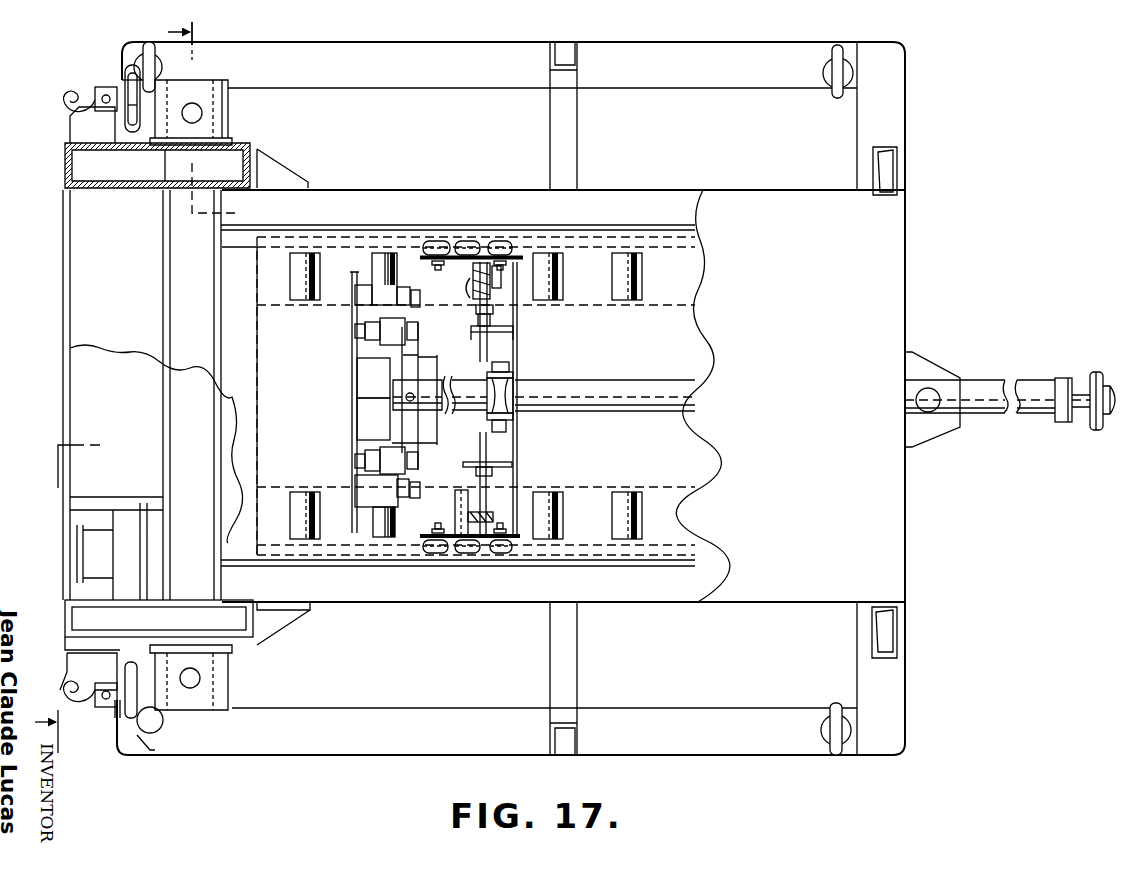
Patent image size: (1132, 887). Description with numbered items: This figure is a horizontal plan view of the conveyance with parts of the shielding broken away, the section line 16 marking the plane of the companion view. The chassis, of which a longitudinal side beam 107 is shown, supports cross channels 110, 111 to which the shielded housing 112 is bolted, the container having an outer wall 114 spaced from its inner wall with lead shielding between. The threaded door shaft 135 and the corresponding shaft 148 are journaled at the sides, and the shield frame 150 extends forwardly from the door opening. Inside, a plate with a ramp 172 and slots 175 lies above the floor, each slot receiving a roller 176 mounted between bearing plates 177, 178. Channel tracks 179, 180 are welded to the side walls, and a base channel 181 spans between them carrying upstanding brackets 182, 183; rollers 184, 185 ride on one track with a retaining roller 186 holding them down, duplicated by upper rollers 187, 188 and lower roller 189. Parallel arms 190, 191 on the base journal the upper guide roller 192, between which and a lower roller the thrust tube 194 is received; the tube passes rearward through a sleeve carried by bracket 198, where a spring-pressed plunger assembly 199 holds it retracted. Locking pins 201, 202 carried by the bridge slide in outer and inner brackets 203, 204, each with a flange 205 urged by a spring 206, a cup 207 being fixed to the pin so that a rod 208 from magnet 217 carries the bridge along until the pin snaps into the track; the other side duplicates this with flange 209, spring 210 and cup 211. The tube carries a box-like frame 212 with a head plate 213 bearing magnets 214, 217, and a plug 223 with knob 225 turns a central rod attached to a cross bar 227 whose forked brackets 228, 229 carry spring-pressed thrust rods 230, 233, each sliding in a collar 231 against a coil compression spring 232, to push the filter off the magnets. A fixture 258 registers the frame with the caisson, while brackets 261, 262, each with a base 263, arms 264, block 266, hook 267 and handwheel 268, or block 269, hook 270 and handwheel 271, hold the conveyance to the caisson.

The section line 16 is at (136, 387).
The longitudinal side beam 107 is at (626, 718).
The cross channel 110 is at (572, 135).
The cross channel 111 is at (865, 128).
The shielded housing 112 is at (908, 281).
The outer wall 114 is at (822, 350).
The shaft 135 is at (193, 102).
The shaft 148 is at (190, 688).
The frame 150 is at (62, 305).
The ramp 172 is at (230, 328).
The slot 175 is at (562, 277).
The roller 176 is at (549, 300).
The bearing plate 177 is at (578, 253).
The bearing plate 178 is at (677, 308).
The track 179 is at (303, 231).
The track 180 is at (640, 555).
The base channel 181 is at (519, 437).
The bracket 182 is at (434, 258).
The bracket 183 is at (431, 531).
The roller 184 is at (437, 243).
The roller 185 is at (498, 243).
The retaining roller 186 is at (465, 243).
The upper roller 187 is at (436, 553).
The upper roller 188 is at (503, 553).
The lower roller 189 is at (466, 553).
The arm 190 is at (510, 367).
The arm 191 is at (516, 420).
The upper guide roller 192 is at (514, 393).
The thrust tube 194 is at (592, 380).
The bracket 198 is at (926, 362).
The spring-pressed plunger assembly 199 is at (931, 410).
The locking pin 201 is at (476, 320).
The locking pin 202 is at (481, 460).
The outer bracket 203 is at (473, 266).
The inner bracket 204 is at (506, 333).
The flange 205 is at (502, 323).
The spring 206 is at (482, 328).
The cup 207 is at (494, 288).
The rod 208 is at (479, 301).
The flange 209 is at (470, 484).
The spring 210 is at (497, 470).
The cup 211 is at (480, 517).
The box-like frame 212 is at (384, 391).
The head plate 213 is at (350, 389).
The magnet 214 is at (367, 507).
The magnet 217 is at (372, 285).
The plug 223 is at (1075, 420).
The knob 225 is at (1097, 372).
The cross bar 227 is at (416, 370).
The forked bracket 228 is at (374, 419).
The forked bracket 229 is at (400, 341).
The thrust rod 230 is at (353, 339).
The collar 231 is at (362, 333).
The coil compression spring 232 is at (366, 326).
The thrust rod 233 is at (353, 459).
The fixture 258 is at (101, 533).
The bracket 261 is at (67, 653).
The bracket 262 is at (88, 126).
The base 263 is at (150, 640).
The arm 264 is at (83, 692).
The block 266 is at (117, 720).
The hook 267 is at (98, 716).
The handwheel 268 is at (148, 742).
The block 269 is at (104, 88).
The hook 270 is at (83, 94).
The handwheel 271 is at (131, 130).